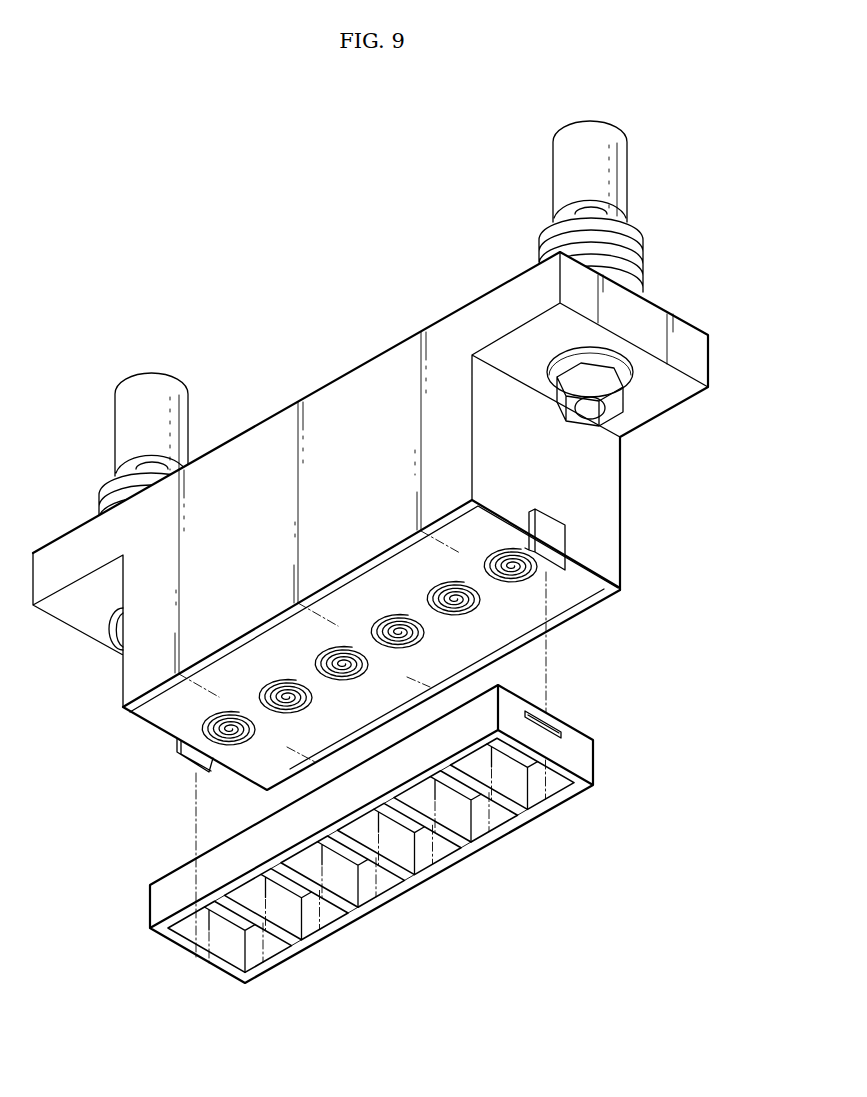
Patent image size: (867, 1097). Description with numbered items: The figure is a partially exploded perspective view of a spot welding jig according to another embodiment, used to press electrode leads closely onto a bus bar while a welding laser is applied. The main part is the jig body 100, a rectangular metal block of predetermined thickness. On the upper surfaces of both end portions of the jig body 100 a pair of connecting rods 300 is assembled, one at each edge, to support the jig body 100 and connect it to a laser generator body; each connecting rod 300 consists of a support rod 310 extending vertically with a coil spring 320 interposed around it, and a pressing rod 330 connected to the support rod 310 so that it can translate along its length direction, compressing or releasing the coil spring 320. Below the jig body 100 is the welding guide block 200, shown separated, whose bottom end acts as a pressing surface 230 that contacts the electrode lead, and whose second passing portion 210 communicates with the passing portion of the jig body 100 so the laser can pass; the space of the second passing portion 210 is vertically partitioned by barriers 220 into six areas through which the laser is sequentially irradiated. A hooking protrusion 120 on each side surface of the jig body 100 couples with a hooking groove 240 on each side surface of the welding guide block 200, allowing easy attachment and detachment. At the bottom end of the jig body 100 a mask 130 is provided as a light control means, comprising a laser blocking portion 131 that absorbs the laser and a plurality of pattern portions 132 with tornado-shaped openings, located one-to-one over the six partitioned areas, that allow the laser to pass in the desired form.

The jig body 100 is at (122, 686).
The hooking protrusion 120 is at (180, 752).
The mask 130 is at (144, 730).
The laser blocking portion 131 is at (568, 594).
The pattern portion 132 is at (286, 722).
The welding guide block 200 is at (378, 860).
The second passing portion 210 is at (292, 897).
The barrier 220 is at (330, 908).
The pressing surface 230 is at (218, 967).
The hooking groove 240 is at (563, 731).
The connecting rod 300 is at (384, 307).
The support rod 310 is at (603, 206).
The coil spring 320 is at (630, 249).
The pressing rod 330 is at (615, 160).